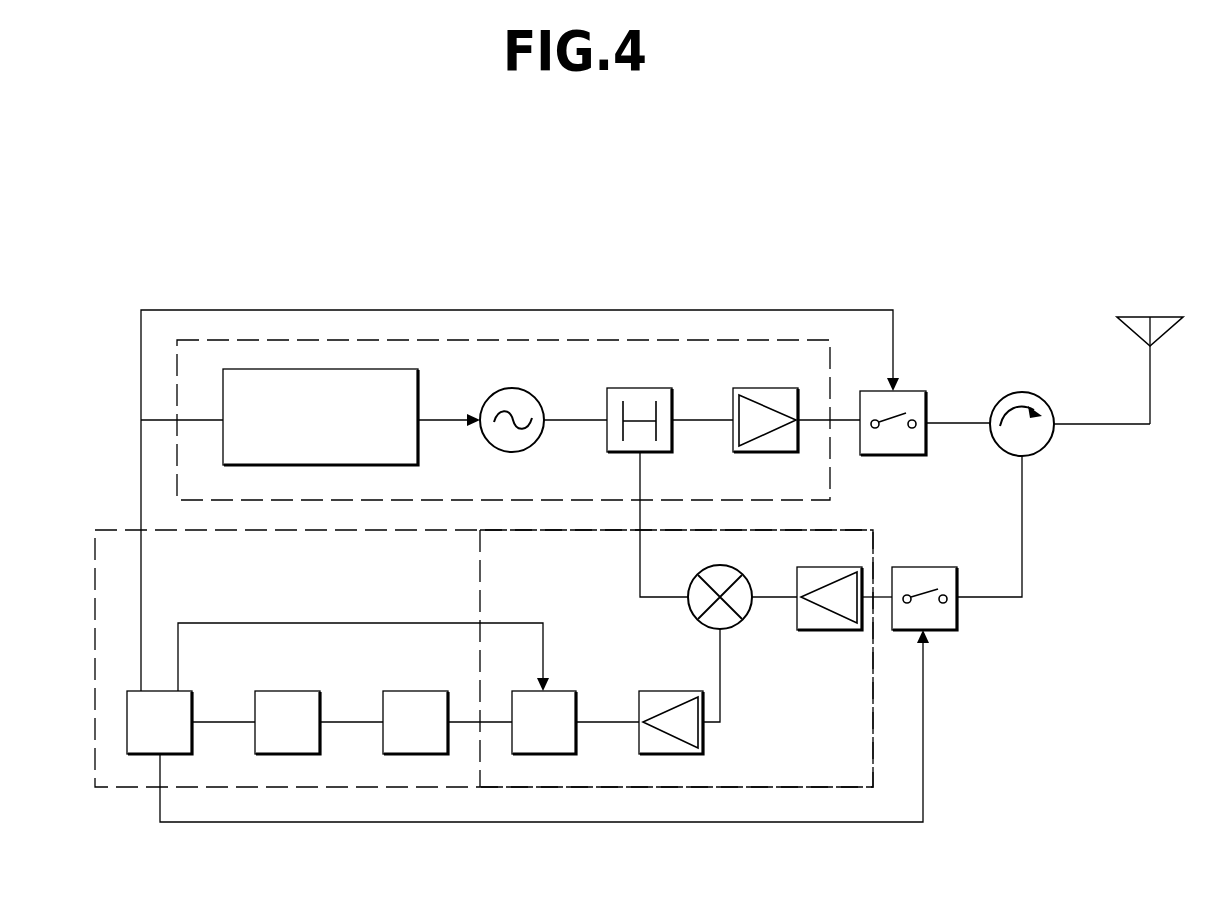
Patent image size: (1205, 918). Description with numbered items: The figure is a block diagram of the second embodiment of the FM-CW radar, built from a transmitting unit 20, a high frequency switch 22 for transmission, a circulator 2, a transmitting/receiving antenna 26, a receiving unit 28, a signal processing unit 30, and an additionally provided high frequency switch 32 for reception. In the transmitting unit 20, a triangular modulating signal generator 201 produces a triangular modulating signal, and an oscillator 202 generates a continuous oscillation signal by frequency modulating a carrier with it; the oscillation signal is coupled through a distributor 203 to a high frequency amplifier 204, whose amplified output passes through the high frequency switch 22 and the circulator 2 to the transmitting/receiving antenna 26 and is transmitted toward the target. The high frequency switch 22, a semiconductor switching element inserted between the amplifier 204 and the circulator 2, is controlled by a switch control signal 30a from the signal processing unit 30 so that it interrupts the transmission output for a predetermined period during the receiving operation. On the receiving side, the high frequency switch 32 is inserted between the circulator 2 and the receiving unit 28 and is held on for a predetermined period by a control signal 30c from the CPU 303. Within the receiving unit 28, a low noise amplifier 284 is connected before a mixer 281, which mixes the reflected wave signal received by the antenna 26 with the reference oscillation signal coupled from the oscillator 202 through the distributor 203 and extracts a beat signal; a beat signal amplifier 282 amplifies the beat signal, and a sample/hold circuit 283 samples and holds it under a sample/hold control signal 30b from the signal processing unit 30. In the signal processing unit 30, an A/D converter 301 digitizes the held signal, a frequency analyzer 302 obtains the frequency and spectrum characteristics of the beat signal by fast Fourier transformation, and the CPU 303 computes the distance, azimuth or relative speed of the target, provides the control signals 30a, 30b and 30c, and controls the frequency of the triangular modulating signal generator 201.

The circulator 2 is at (1042, 454).
The transmitting unit 20 is at (198, 338).
The triangular modulating signal generator 201 is at (300, 369).
The oscillator 202 is at (510, 388).
The distributor 203 is at (624, 388).
The high frequency amplifier 204 is at (754, 388).
The high frequency switch for transmission 22 is at (906, 457).
The transmitting/receiving antenna 26 is at (1146, 317).
The receiving unit 28 is at (874, 570).
The mixer 281 is at (748, 620).
The beat signal amplifier 282 is at (666, 755).
The sample/hold circuit 283 is at (538, 755).
The low noise amplifier 284 is at (820, 632).
The signal processing unit 30 is at (106, 530).
The switch control signal 30a is at (141, 375).
The sample/hold control signal 30b is at (304, 623).
The control signal 30c is at (544, 748).
The A/D converter 301 is at (414, 691).
The frequency analyzer 302 is at (290, 691).
The CPU 303 is at (140, 754).
The high frequency switch for reception 32 is at (958, 630).